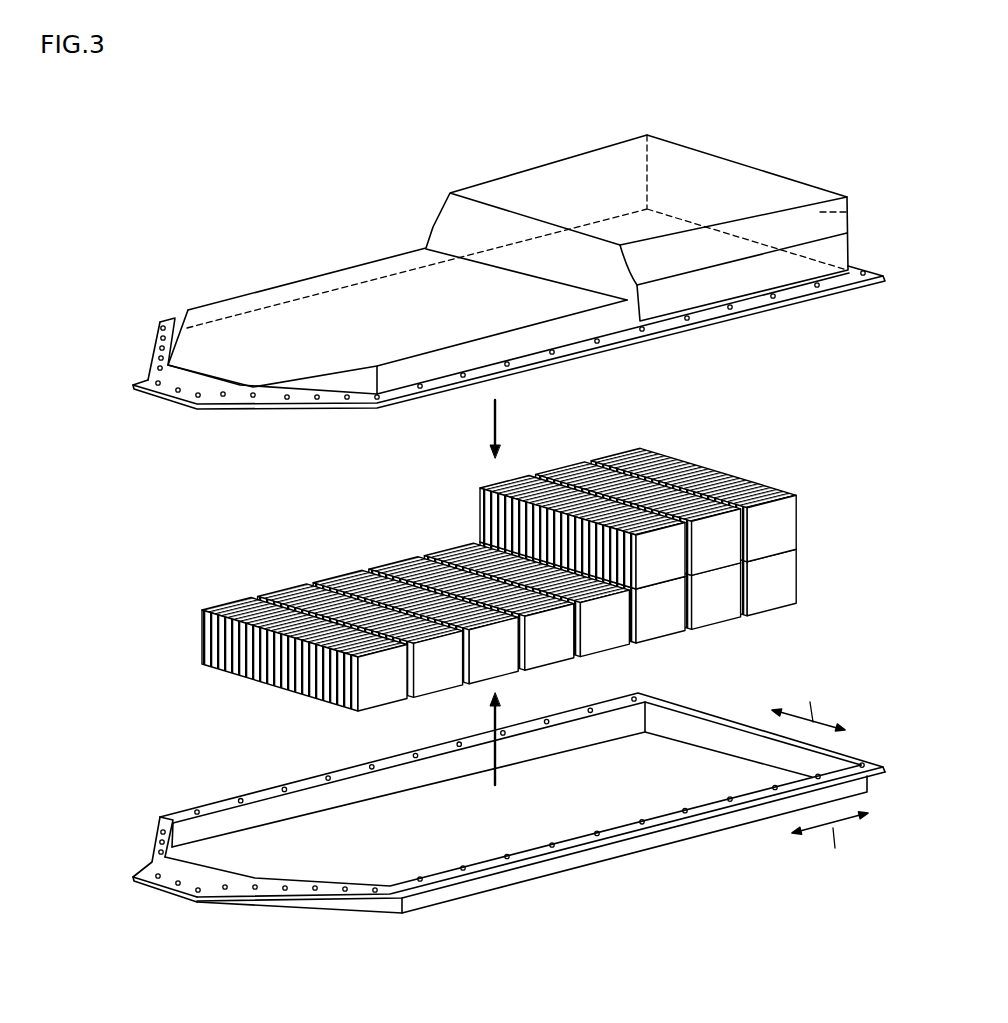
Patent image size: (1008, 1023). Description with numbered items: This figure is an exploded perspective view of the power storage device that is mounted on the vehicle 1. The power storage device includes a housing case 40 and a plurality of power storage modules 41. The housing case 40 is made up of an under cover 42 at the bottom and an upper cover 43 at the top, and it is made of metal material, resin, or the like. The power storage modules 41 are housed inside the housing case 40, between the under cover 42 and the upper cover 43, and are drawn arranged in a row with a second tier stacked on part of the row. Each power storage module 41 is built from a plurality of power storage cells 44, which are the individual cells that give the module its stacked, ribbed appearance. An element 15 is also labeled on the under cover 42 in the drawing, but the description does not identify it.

The vehicle 1 is at (829, 141).
The flange portion of lower case 15 is at (688, 713).
The housing case 40 is at (112, 524).
The power storage module 41 is at (713, 610).
The under cover 42 is at (143, 829).
The upper cover 43 is at (152, 461).
The power storage cell 44 is at (669, 468).